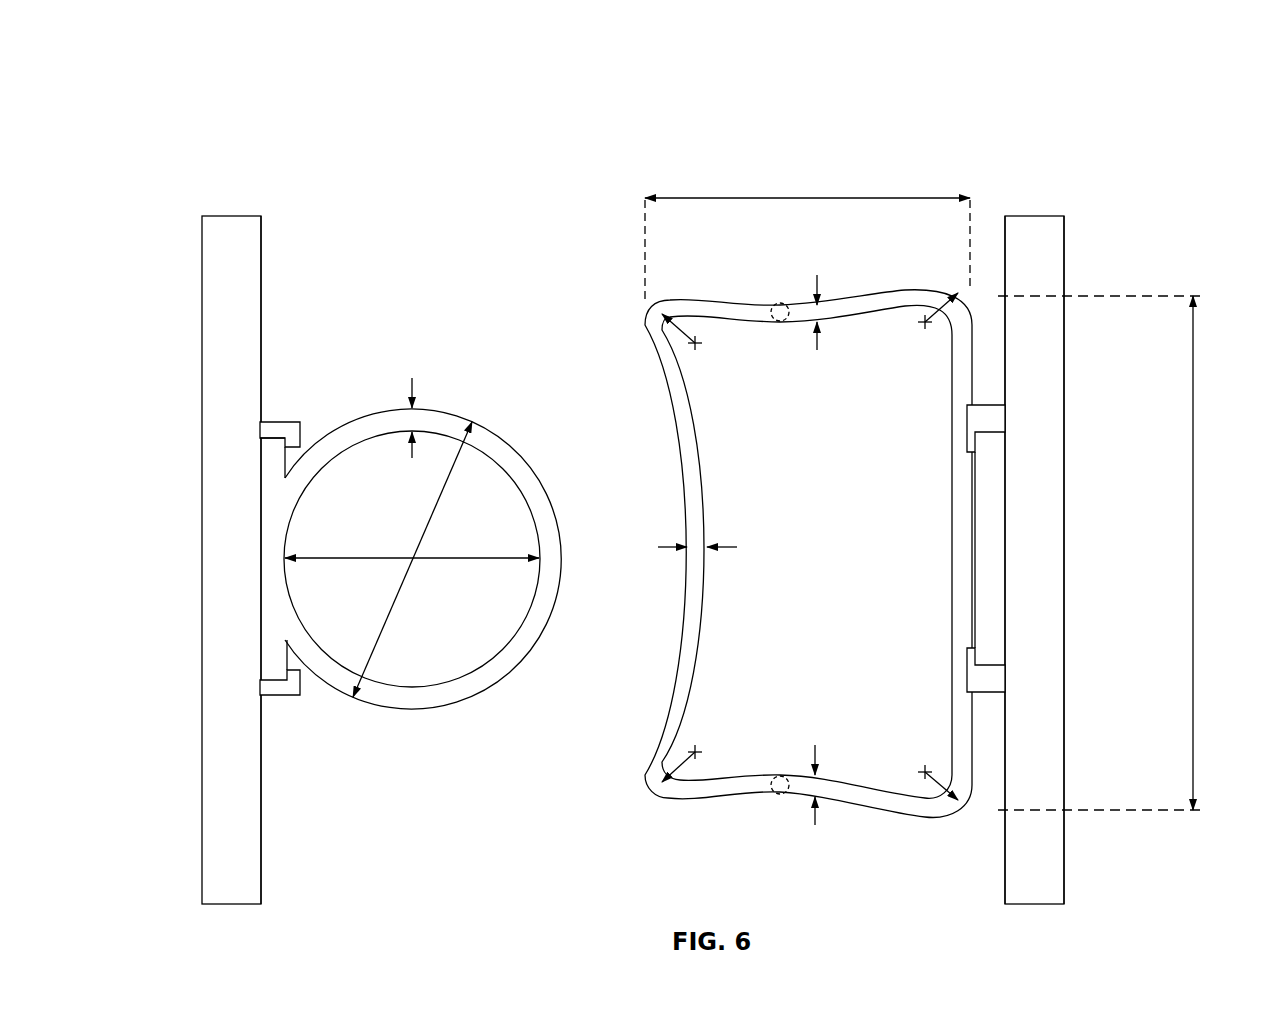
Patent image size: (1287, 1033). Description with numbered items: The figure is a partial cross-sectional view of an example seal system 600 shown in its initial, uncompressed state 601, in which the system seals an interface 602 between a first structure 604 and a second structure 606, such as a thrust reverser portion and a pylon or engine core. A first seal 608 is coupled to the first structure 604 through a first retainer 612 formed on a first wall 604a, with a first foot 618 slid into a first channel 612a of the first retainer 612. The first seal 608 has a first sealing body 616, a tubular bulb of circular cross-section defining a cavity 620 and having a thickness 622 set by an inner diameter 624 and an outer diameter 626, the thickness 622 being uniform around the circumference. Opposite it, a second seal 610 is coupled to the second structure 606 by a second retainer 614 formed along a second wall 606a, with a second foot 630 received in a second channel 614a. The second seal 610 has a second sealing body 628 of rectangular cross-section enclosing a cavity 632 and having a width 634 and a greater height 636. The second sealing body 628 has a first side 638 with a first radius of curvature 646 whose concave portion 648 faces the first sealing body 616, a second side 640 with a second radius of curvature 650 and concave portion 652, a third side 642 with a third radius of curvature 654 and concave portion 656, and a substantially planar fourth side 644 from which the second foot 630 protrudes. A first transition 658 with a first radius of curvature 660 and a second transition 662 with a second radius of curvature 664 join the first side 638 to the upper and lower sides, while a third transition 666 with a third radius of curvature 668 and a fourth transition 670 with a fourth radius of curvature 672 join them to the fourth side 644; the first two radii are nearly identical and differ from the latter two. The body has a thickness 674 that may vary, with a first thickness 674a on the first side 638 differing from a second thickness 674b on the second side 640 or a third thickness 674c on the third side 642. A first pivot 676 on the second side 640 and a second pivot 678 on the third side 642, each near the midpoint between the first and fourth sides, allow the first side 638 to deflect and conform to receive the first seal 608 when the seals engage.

The seal system 600 is at (297, 68).
The uncompressed state 601 is at (624, 131).
The interface 602 is at (467, 176).
The first structure 604 is at (232, 214).
The first wall 604a is at (262, 270).
The second structure 606 is at (1045, 215).
The second wall 606a is at (1005, 883).
The first seal 608 is at (422, 530).
The second seal 610 is at (637, 361).
The first retainer 612 is at (282, 421).
The first channel 612a is at (278, 678).
The second retainer 614 is at (997, 693).
The second channel 614a is at (1000, 662).
The first sealing body 616 is at (455, 693).
The first foot 618 is at (273, 455).
The cavity 620 is at (390, 518).
The thickness 622 is at (420, 396).
The inner diameter 624 is at (480, 563).
The outer diameter 626 is at (440, 500).
The second sealing body 628 is at (665, 408).
The second foot 630 is at (1007, 548).
The cavity 632 is at (851, 623).
The width 634 is at (730, 196).
The height 636 is at (1194, 378).
The first side 638 is at (685, 597).
The second side 640 is at (890, 300).
The third side 642 is at (905, 815).
The fourth side 644 is at (972, 350).
The first radius of curvature 646 is at (708, 522).
The concave portion 648 is at (687, 537).
The second radius of curvature 650 is at (865, 335).
The concave portion 652 is at (892, 291).
The third radius of curvature 654 is at (768, 770).
The concave portion 656 is at (848, 803).
The first transition 658 is at (676, 297).
The first radius of curvature 660 is at (660, 315).
The second transition 662 is at (649, 763).
The second radius of curvature 664 is at (660, 786).
The third transition 666 is at (972, 308).
The third radius of curvature 668 is at (930, 331).
The fourth transition 670 is at (957, 808).
The fourth radius of curvature 672 is at (938, 768).
The thickness 674 is at (784, 548).
The first thickness 674a is at (727, 550).
The second thickness 674b is at (817, 350).
The third thickness 674c is at (818, 756).
The first pivot 676 is at (782, 304).
The second pivot 678 is at (780, 794).